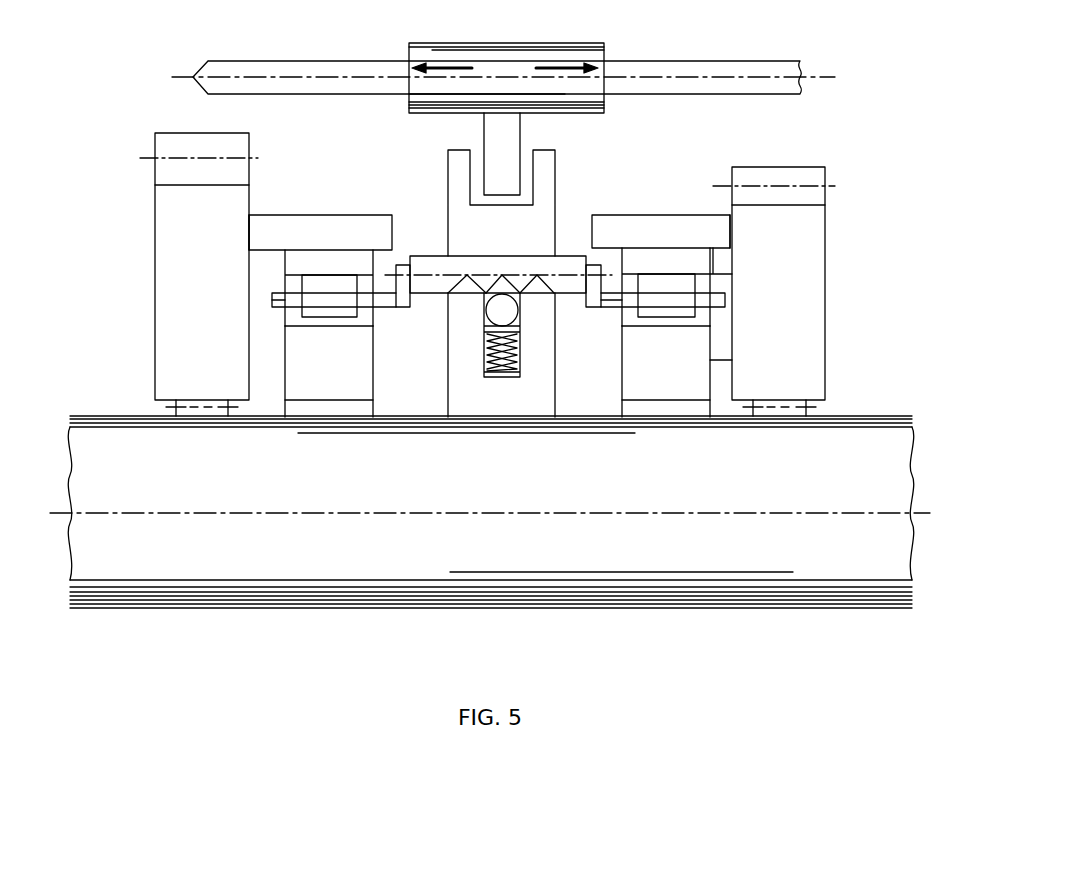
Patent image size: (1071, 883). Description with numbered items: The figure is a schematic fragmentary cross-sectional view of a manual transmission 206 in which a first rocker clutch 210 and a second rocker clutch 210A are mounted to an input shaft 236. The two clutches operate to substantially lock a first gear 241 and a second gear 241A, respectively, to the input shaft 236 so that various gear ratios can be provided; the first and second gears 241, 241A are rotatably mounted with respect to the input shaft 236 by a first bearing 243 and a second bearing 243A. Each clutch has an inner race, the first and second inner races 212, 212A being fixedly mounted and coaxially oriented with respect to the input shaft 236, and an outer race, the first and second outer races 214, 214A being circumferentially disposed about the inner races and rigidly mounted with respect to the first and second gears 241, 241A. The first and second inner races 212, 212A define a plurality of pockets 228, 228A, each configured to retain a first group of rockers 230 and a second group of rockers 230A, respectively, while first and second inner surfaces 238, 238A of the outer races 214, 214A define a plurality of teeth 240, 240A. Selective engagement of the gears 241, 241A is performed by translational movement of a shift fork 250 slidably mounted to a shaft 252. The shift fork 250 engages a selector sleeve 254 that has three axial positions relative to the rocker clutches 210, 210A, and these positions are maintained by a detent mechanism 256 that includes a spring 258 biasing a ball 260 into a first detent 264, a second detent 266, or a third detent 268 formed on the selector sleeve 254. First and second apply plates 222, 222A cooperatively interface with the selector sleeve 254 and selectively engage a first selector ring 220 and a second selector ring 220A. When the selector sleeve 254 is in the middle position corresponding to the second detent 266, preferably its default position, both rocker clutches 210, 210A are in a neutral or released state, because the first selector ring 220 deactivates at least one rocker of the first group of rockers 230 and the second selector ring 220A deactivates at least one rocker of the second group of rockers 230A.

The transmission 206 is at (132, 98).
The shift fork 250 is at (554, 43).
The shaft 252 is at (716, 61).
The selector sleeve 254 is at (555, 165).
The detent mechanism 256 is at (432, 316).
The spring 258 is at (488, 357).
The ball 260 is at (483, 314).
The first detent 264 is at (467, 275).
The second detent 266 is at (502, 275).
The third detent 268 is at (537, 275).
The first rocker clutch 210 is at (586, 319).
The second rocker clutch 210A is at (268, 319).
The first inner race 212 is at (732, 360).
The second inner race 212A is at (285, 360).
The first outer race 214 is at (732, 260).
The second outer race 214A is at (280, 214).
The first selector ring 220 is at (604, 316).
The second selector ring 220A is at (290, 310).
The first apply plate 222 is at (601, 288).
The second apply plate 222A is at (395, 290).
The pockets 228 is at (725, 300).
The pockets 228A is at (272, 300).
The first group of rockers 230 is at (682, 317).
The second group of rockers 230A is at (327, 316).
The input shaft 236 is at (814, 609).
The first inner surface 238 is at (732, 260).
The second inner surface 238A is at (368, 253).
The teeth 240 is at (732, 272).
The teeth 240A is at (287, 272).
The first gear 241 is at (825, 364).
The second gear 241A is at (155, 362).
The first bearing 243 is at (823, 412).
The second bearing 243A is at (175, 414).